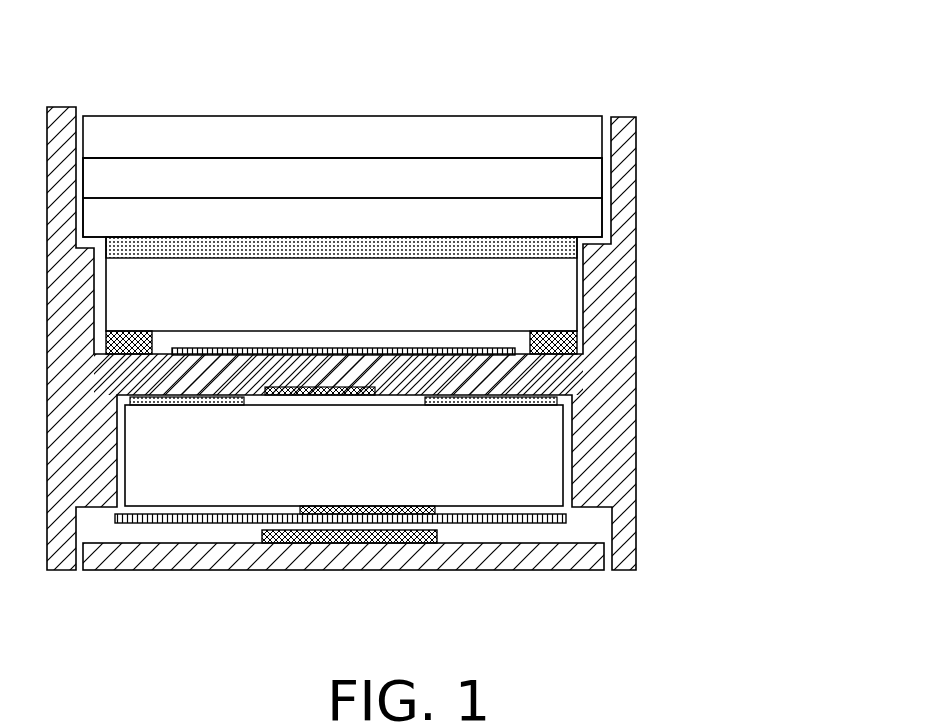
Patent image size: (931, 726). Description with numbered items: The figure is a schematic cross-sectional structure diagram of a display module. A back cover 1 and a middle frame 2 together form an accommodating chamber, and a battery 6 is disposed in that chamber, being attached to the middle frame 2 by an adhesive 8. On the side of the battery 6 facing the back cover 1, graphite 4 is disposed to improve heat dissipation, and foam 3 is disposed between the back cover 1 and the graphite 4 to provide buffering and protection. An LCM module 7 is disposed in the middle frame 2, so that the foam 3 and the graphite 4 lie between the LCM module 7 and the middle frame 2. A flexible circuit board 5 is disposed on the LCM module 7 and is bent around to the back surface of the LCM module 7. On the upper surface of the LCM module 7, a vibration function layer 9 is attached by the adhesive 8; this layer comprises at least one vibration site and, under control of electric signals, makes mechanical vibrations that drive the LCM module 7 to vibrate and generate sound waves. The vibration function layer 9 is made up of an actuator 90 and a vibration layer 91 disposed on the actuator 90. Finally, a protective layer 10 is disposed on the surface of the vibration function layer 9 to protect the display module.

The back cover 1 is at (165, 563).
The middle frame 2 is at (627, 367).
The foam 3 is at (567, 342).
The graphite 4 is at (358, 352).
The flexible circuit board 5 is at (320, 395).
The battery 6 is at (549, 483).
The LCM module 7 is at (557, 305).
The adhesive 8 is at (613, 237).
The vibration function layer 9 is at (732, 142).
The protective layer 10 is at (562, 135).
The actuator 90 is at (562, 213).
The vibration layer 91 is at (562, 174).